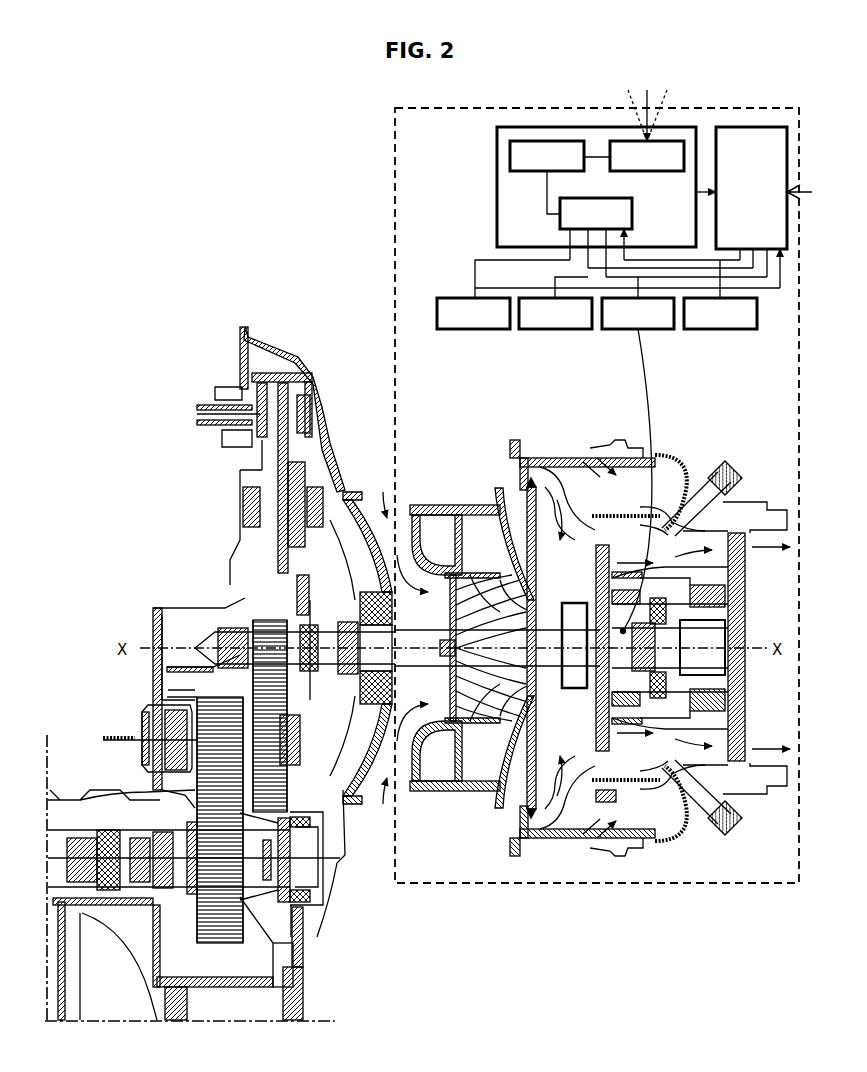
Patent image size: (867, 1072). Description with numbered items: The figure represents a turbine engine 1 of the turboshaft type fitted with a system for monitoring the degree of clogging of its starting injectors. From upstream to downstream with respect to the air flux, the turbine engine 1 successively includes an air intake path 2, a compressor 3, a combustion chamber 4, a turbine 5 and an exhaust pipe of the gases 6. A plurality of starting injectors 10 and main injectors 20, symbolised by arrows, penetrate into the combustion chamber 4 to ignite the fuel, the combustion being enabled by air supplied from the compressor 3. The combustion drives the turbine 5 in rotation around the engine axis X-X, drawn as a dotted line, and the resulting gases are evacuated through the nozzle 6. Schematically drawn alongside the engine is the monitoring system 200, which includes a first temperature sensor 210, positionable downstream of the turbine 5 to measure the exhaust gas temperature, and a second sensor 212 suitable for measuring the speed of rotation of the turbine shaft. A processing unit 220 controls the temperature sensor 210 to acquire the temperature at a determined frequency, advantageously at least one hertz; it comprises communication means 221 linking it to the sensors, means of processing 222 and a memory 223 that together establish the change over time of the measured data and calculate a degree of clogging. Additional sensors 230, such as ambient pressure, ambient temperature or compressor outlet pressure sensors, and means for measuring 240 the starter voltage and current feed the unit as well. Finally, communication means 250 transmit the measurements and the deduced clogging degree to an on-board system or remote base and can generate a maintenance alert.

The turbine engine 1 is at (532, 906).
The air intake path 2 is at (403, 507).
The compressor 3 is at (457, 745).
The combustion chamber 4 is at (675, 480).
The turbine 5 is at (605, 480).
The exhaust pipe of the gases 6 is at (747, 575).
The starting injectors 10 is at (610, 453).
The main injectors 20 is at (606, 822).
The system for monitoring a degree of clogging of the starting injectors 200 is at (393, 237).
The first temperature sensor 210 is at (690, 294).
The second sensor 212 is at (684, 455).
The processing unit 220 is at (496, 190).
The communication means 221 is at (596, 213).
The means of processing 222 is at (547, 156).
The memory 223 is at (647, 156).
The additional sensors 230 is at (608, 294).
The means for measuring 240 is at (636, 298).
The communication means 250 is at (751, 207).